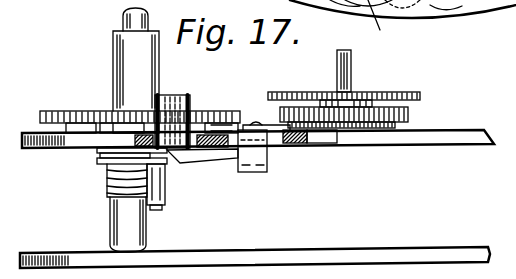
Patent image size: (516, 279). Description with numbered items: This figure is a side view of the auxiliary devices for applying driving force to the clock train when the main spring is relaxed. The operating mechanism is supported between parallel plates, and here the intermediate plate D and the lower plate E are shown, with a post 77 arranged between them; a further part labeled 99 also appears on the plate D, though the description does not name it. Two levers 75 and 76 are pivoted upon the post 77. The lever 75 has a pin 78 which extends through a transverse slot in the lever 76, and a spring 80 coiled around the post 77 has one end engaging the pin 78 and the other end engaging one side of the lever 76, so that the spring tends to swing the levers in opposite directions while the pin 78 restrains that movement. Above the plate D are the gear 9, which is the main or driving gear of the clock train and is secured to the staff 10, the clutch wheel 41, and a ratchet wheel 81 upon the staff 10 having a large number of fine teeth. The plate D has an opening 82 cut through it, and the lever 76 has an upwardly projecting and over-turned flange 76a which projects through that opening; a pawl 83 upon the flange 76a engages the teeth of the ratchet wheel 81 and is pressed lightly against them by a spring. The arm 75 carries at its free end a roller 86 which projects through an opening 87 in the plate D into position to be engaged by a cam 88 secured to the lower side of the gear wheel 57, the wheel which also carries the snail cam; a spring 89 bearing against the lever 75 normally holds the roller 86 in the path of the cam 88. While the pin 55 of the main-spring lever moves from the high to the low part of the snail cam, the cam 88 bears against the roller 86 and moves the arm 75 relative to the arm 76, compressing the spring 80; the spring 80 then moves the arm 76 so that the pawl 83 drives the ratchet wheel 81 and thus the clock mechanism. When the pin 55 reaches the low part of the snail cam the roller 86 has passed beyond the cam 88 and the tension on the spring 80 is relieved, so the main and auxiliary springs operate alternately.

The pin 55 is at (384, 25).
The spring 89 is at (446, 26).
The opening 87 is at (169, 111).
The gear wheel 57 is at (62, 112).
The cam 88 is at (147, 122).
The roller 86 is at (198, 111).
The opening 82 is at (240, 128).
The intermediate plate D is at (474, 134).
The rack 99 is at (67, 137).
The spring 80 is at (108, 182).
The post 77 is at (147, 232).
The pin 78 is at (173, 186).
The lever 75 is at (196, 152).
The lever 76 is at (261, 172).
The flange 76a is at (262, 152).
The pawl 83 is at (302, 143).
The clutch wheel 41 is at (404, 93).
The gear 9 is at (410, 110).
The staff 10 is at (352, 66).
The ratchet wheel 81 is at (397, 133).
The supporting plate E is at (440, 253).